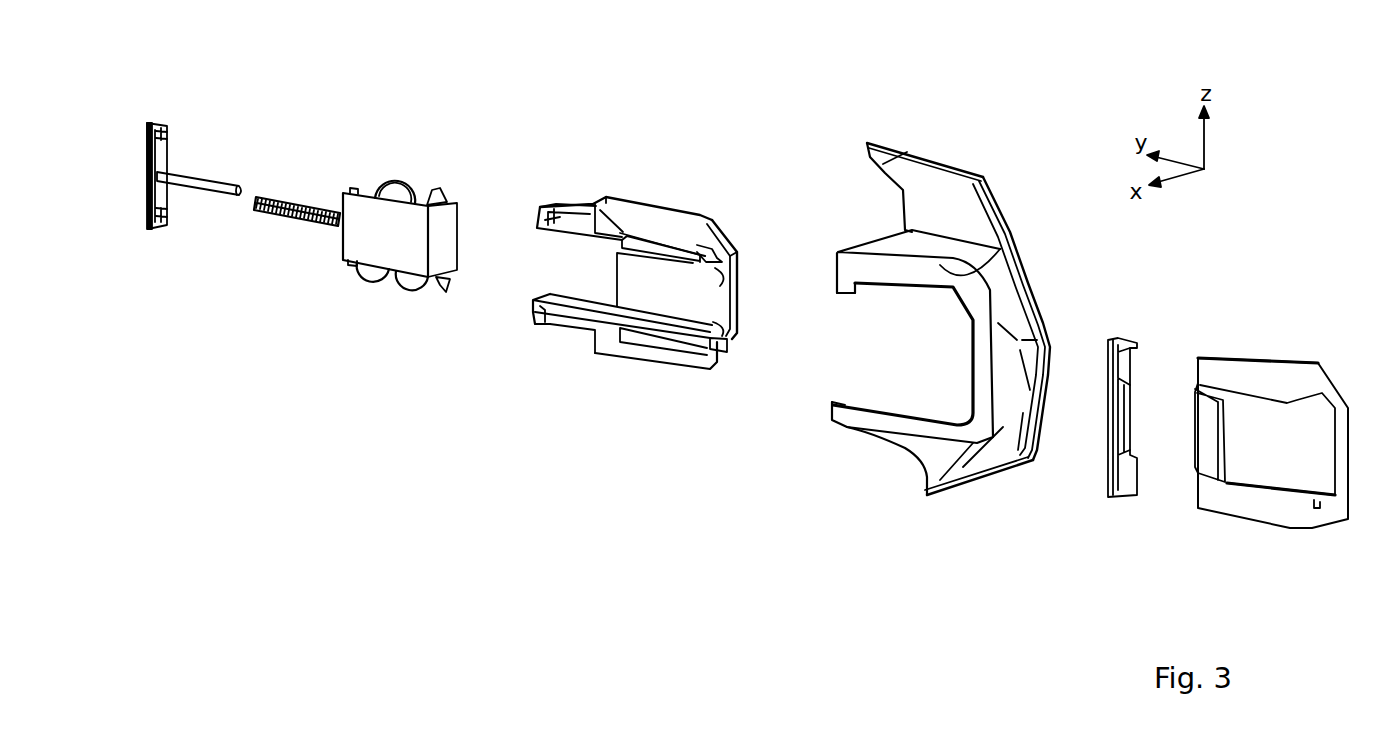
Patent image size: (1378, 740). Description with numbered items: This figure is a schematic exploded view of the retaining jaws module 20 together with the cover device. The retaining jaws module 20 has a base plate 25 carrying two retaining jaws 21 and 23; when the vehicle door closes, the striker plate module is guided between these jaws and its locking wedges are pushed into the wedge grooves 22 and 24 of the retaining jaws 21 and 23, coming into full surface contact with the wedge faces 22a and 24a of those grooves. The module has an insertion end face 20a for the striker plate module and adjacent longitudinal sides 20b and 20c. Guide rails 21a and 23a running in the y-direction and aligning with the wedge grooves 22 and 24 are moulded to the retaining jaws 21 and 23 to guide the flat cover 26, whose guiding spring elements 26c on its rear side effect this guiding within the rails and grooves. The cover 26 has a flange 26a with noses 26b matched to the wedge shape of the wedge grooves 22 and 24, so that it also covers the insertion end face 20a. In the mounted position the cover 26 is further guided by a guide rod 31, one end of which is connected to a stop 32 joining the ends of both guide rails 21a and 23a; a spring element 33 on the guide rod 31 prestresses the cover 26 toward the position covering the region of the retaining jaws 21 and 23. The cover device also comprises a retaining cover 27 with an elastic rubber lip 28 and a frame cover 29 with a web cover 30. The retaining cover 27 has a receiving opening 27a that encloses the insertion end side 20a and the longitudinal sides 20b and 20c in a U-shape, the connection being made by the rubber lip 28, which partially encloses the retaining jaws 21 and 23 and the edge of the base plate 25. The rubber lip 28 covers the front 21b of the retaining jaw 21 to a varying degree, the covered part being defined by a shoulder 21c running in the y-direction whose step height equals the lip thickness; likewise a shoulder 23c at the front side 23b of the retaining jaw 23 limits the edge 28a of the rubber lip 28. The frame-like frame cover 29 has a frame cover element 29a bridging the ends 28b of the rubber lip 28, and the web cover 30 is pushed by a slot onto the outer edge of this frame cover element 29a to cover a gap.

The retaining jaws module 20 is at (695, 247).
The insertion end face 20a is at (756, 318).
The longitudinal side 20b is at (682, 211).
The longitudinal side 20c is at (692, 380).
The retaining jaw 21 is at (675, 195).
The guide rail 21a is at (562, 202).
The front 21b is at (613, 225).
The shoulder 21c is at (641, 228).
The wedge groove 22 is at (727, 248).
The wedge face 22a is at (727, 282).
The retaining jaw 23 is at (668, 386).
The guide rail 23a is at (558, 325).
The front side 23b is at (657, 403).
The shoulder 23c is at (623, 348).
The wedge groove 24 is at (721, 360).
The latching lug 24a is at (725, 325).
The base plate 25 is at (677, 302).
The cover 26 is at (368, 232).
The flange 26a is at (451, 252).
The noses 26b is at (435, 190).
The ring 26c is at (393, 178).
The retaining cover 27 is at (914, 293).
The receiving opening 27a is at (973, 272).
The rubber lip 28 is at (870, 386).
The edge 28a is at (912, 414).
The ends 28b is at (853, 297).
The frame cover 29 is at (1271, 393).
The frame cover element 29a is at (1223, 428).
The web cover 30 is at (1123, 340).
The guide rod 31 is at (202, 182).
The stop 32 is at (153, 121).
The spring element 33 is at (298, 201).